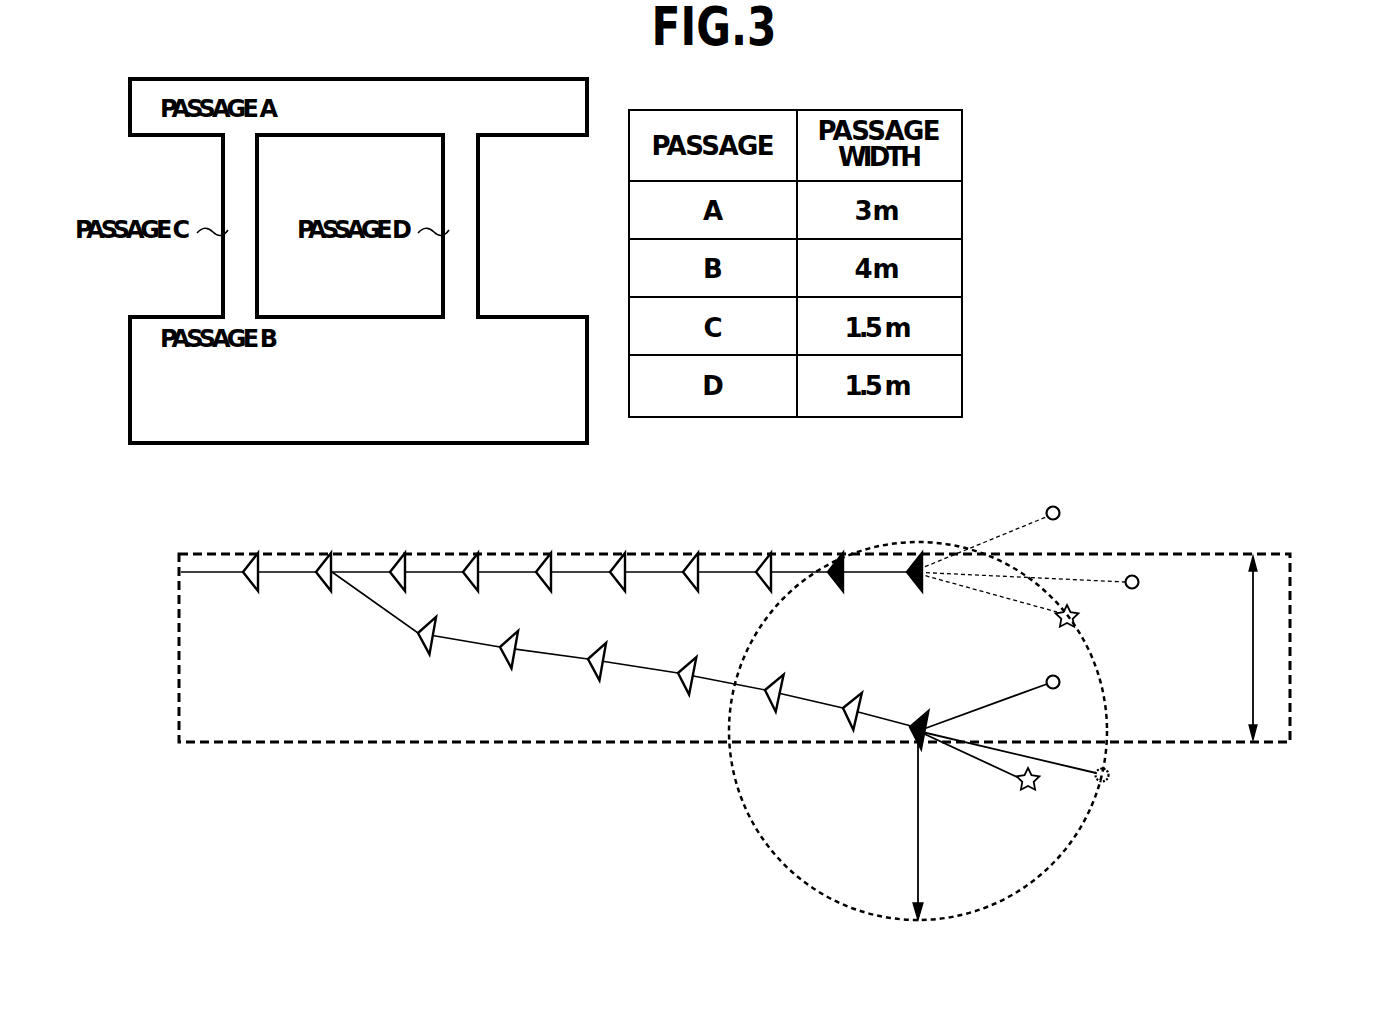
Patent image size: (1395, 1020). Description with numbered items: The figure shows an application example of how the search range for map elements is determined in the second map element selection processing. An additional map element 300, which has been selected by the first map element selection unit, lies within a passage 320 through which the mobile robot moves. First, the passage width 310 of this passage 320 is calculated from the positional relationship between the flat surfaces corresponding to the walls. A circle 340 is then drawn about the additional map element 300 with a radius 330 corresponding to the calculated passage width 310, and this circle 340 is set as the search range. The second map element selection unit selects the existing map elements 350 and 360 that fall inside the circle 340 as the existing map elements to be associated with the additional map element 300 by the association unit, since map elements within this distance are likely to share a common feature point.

The additional map element 300 is at (929, 748).
The passage width 310 is at (1256, 648).
The passage 320 is at (393, 742).
The radius 330 is at (913, 830).
The circle 340 is at (744, 815).
The existing map element 350 is at (846, 570).
The existing map element 360 is at (911, 570).